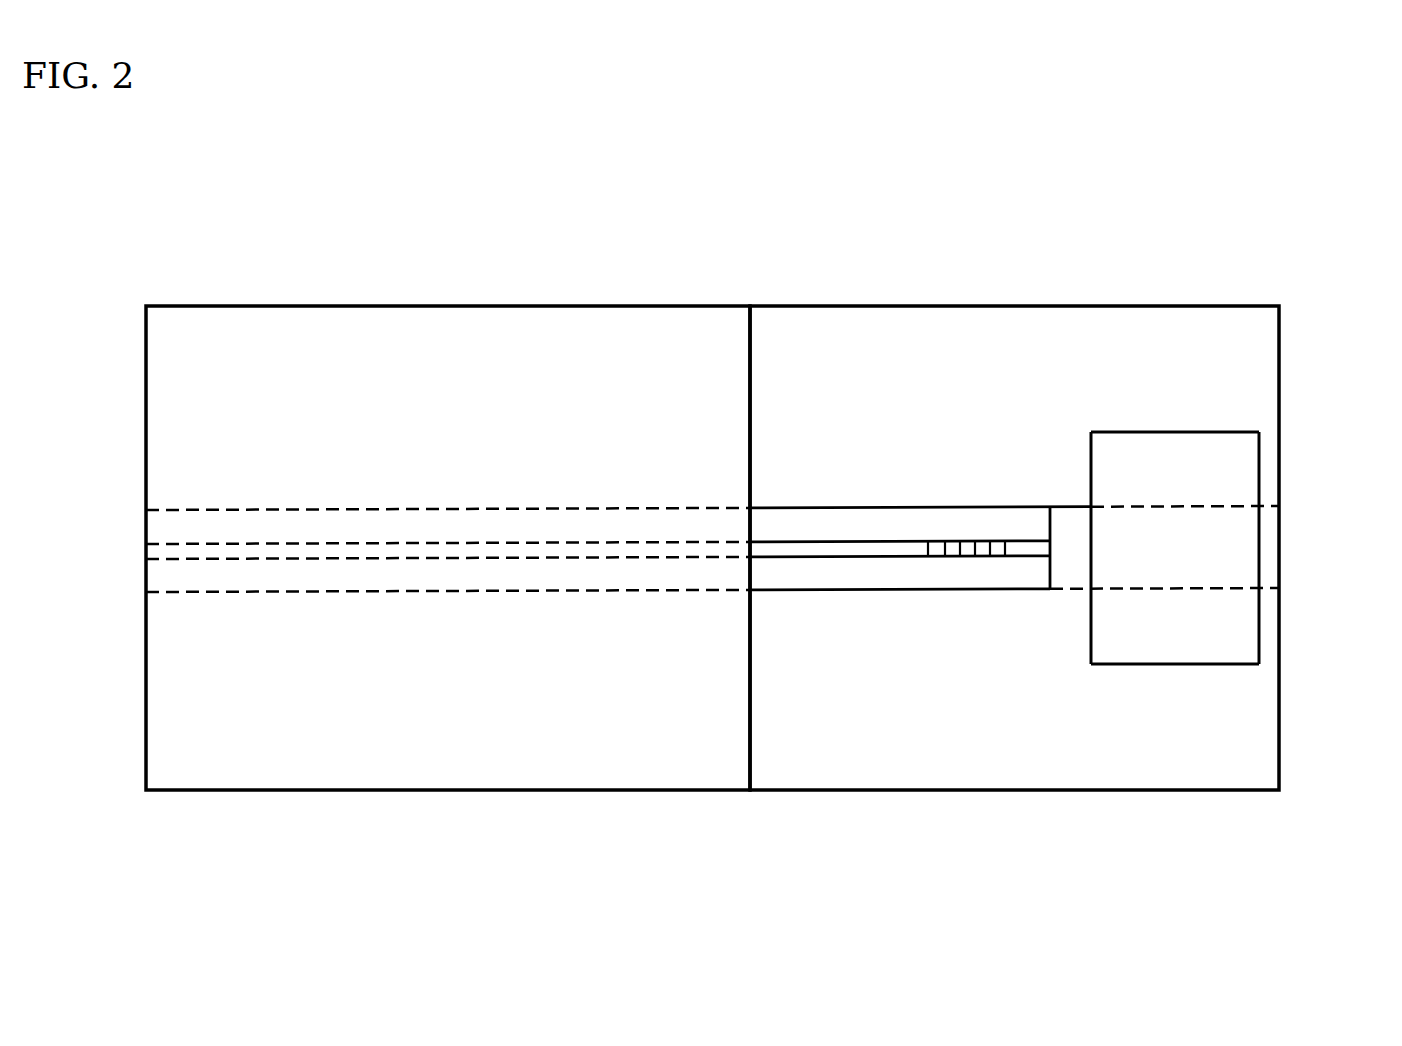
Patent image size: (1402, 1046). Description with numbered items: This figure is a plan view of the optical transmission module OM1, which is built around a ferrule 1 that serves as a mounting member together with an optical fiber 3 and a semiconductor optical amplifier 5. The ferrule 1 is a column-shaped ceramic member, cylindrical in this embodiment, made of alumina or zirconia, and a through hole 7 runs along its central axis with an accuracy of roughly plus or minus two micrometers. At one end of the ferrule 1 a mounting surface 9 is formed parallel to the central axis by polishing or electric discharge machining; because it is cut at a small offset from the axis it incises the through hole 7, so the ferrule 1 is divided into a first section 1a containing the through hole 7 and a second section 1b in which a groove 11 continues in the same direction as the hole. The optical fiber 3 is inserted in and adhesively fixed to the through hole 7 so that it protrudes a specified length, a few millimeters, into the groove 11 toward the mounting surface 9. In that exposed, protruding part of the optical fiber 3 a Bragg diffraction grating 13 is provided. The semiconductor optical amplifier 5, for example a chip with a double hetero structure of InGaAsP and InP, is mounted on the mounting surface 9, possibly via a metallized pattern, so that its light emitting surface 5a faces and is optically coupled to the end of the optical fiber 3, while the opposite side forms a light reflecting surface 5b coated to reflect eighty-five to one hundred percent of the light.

The optical transmission module OM1 is at (903, 205).
The ferrule 1 is at (136, 628).
The first section 1a is at (458, 792).
The second section 1b is at (994, 792).
The optical fiber 3 is at (810, 591).
The semiconductor optical amplifier 5 is at (1215, 522).
The light emitting surface 5a is at (1088, 558).
The light reflecting surface 5b is at (1259, 546).
The through hole 7 is at (437, 511).
The mounting surface 9 is at (1055, 332).
The groove 11 is at (1066, 517).
The Bragg diffraction grating 13 is at (1013, 561).